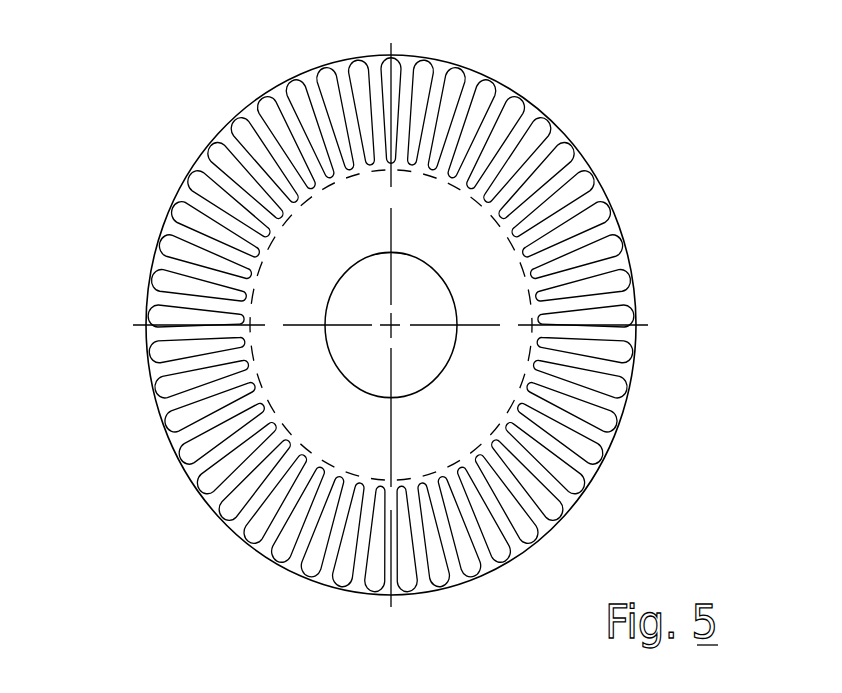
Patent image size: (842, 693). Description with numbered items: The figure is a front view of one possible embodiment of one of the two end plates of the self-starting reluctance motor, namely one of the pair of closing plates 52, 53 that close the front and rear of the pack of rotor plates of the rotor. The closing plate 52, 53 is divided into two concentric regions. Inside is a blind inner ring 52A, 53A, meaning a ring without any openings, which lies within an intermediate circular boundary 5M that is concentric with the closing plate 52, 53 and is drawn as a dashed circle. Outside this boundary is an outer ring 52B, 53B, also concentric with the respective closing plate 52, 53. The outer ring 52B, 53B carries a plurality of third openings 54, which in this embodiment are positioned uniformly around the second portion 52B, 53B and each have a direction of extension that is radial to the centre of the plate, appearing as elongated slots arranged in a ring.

The closing plate 52 is at (137, 142).
The closing plate 53 is at (409, 303).
The blind inner ring 52A is at (437, 200).
The blind inner ring 53A is at (412, 240).
The outer ring 52B is at (565, 250).
The outer ring 53B is at (461, 325).
The third openings 54 is at (633, 352).
The intermediate circular boundary 5M is at (230, 373).